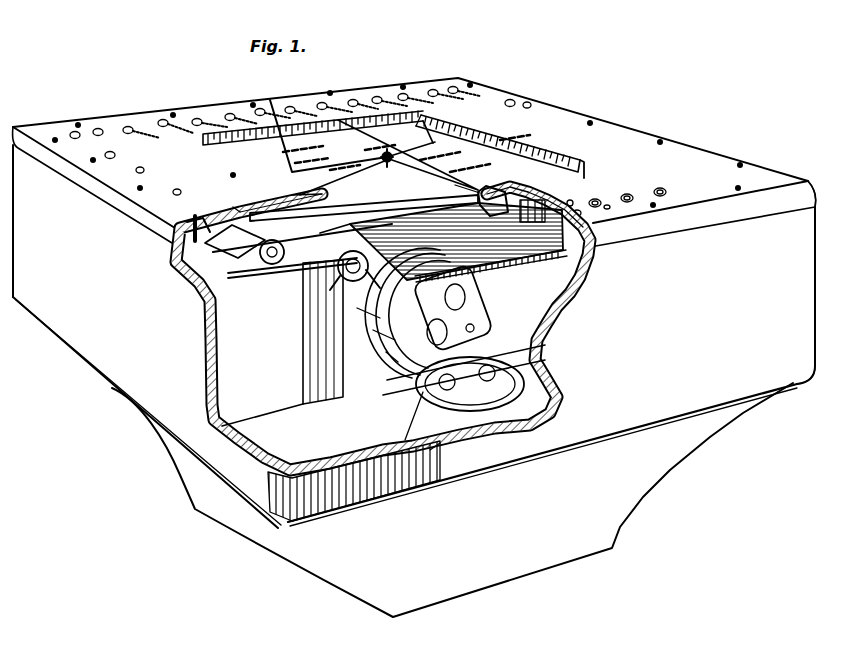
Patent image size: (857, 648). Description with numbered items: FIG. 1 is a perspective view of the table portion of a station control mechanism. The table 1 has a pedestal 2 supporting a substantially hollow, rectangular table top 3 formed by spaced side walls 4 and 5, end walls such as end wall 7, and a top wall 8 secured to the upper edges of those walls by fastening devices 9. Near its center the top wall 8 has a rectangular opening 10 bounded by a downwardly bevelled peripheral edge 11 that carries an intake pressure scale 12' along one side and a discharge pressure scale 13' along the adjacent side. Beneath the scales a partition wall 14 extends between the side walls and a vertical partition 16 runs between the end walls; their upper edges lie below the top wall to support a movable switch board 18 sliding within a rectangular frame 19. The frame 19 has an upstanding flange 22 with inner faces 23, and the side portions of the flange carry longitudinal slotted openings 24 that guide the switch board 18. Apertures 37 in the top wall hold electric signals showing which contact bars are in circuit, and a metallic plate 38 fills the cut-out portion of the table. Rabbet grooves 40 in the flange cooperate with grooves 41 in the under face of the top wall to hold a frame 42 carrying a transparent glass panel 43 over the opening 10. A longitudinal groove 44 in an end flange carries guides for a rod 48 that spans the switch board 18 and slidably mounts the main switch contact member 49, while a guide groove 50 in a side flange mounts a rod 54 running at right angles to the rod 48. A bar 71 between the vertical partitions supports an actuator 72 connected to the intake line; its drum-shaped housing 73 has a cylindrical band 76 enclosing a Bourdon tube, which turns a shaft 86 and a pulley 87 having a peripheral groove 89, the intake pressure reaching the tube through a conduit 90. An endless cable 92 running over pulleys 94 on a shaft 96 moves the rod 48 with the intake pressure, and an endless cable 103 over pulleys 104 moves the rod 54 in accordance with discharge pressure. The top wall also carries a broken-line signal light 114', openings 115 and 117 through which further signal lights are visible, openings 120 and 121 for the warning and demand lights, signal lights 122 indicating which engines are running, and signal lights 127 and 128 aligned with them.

The table 1 is at (717, 403).
The pedestal 2 is at (603, 528).
The table top 3 is at (210, 407).
The side wall 4 is at (118, 368).
The side wall 5 is at (818, 207).
The end wall 7 is at (790, 380).
The top wall 8 is at (657, 160).
The fastening devices 9 is at (172, 240).
The rectangular-shaped opening 10 is at (588, 168).
The downwardly bevelled peripheral edge 11 is at (462, 127).
The intake pressure scale 12' is at (313, 113).
The discharge pressure scale 13' is at (498, 143).
The partition wall 14 is at (522, 330).
The vertical partition 16 is at (333, 400).
The movable switch board 18 is at (560, 258).
The rectangular-shaped frame 19 is at (240, 216).
The flange 22 is at (533, 192).
The inner faces 23 is at (480, 193).
The longitudinal slotted openings 24 is at (556, 205).
The apertures 37 is at (377, 97).
The metallic plate 38 is at (510, 248).
The rabbet grooves 40 is at (515, 197).
The grooves 41 is at (328, 194).
The frame 42 is at (292, 195).
The glass panel 43 is at (222, 152).
The longitudinal groove 44 is at (455, 202).
The rod 48 is at (455, 185).
The main switch contact member 49 is at (387, 162).
The guide groove 50 is at (233, 207).
The rod 54 is at (433, 143).
The bar 71 is at (373, 330).
The actuator 72 is at (423, 393).
The drum-shaped housing 73 is at (393, 365).
The cylindrical band 76 is at (386, 353).
The shaft 86 is at (473, 330).
The pulley 87 is at (470, 388).
The peripheral groove 89 is at (418, 318).
The conduit 90 is at (440, 443).
The endless cable 92 is at (357, 308).
The pulley 94 is at (263, 274).
The shaft 96 is at (217, 235).
The endless cable 103 is at (248, 248).
The pulley 104 is at (340, 270).
The signal light 114' is at (118, 113).
The opening 115 is at (512, 101).
The opening 117 is at (115, 156).
The opening 120 is at (144, 171).
The opening 121 is at (175, 194).
The signal lights 122 is at (597, 208).
The signal light 127 is at (630, 202).
The signal light 128 is at (666, 192).